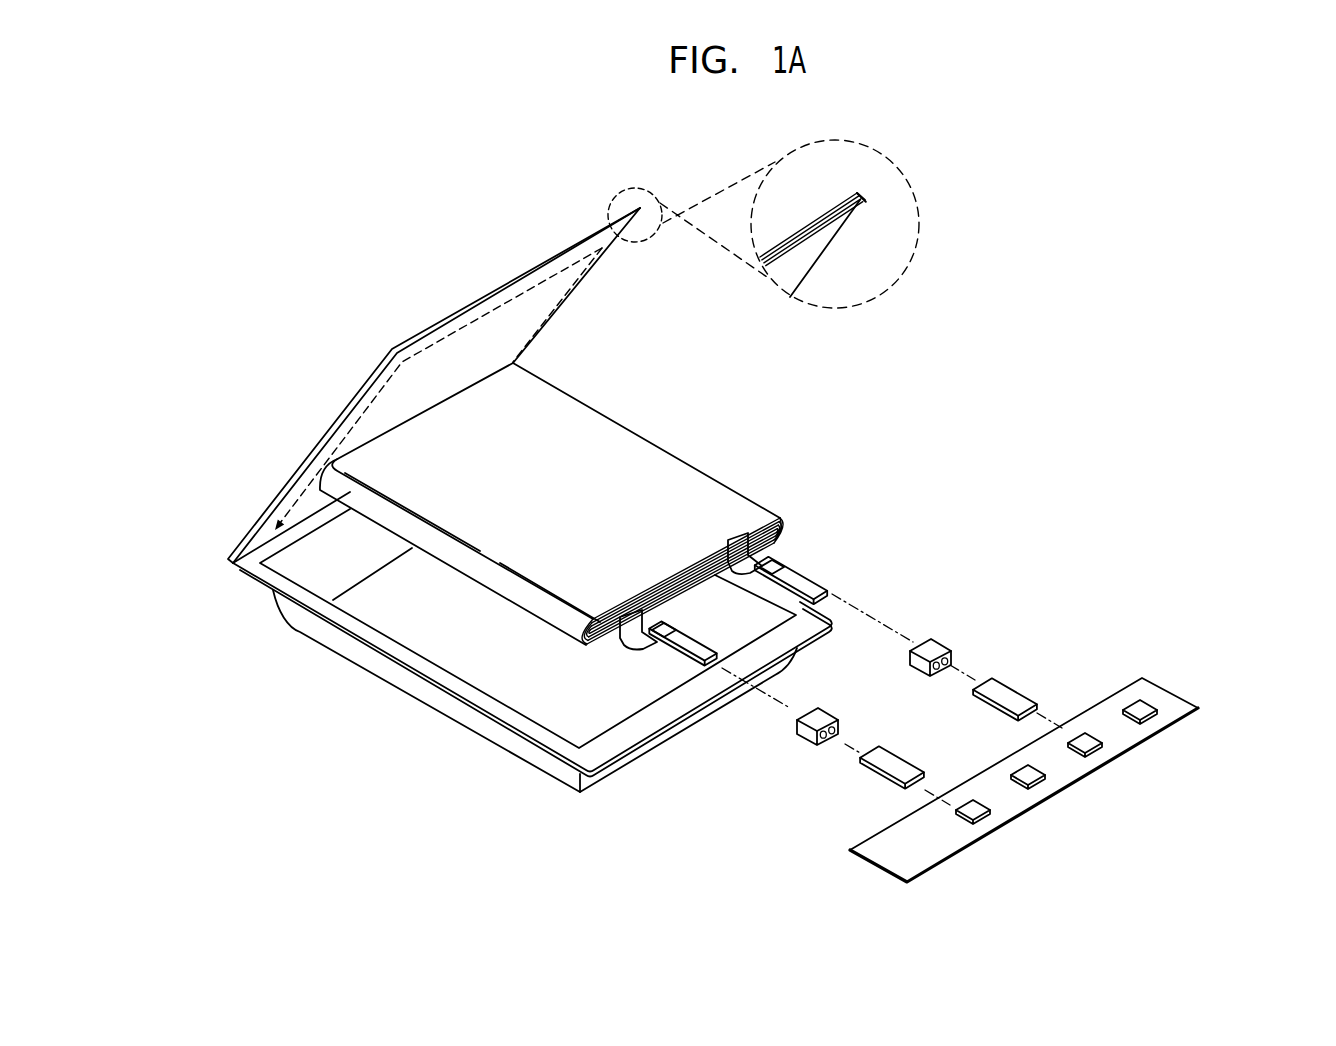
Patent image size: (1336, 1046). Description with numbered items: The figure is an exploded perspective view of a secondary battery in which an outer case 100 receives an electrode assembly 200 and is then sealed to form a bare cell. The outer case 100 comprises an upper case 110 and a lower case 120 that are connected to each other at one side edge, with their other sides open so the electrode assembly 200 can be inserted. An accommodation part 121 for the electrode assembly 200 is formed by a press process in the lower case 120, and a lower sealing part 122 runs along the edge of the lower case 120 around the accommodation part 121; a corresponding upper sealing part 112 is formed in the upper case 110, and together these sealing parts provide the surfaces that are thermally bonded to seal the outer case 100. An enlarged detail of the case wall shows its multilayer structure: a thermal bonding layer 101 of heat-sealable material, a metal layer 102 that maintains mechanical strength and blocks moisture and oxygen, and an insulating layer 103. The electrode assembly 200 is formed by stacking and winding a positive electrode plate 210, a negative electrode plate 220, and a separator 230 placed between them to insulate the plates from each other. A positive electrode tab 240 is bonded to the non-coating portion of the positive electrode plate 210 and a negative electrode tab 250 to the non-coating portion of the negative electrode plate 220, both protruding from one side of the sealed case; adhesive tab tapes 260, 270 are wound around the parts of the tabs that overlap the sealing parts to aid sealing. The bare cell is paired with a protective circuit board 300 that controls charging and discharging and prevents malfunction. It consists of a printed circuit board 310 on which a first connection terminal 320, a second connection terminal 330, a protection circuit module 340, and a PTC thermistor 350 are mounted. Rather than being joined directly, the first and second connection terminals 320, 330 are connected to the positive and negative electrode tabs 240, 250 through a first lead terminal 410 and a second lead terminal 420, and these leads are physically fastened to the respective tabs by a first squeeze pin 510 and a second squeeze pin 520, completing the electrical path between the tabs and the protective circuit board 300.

The outer case 100 is at (168, 507).
The upper case 110 is at (267, 514).
The upper sealing part 112 is at (320, 468).
The lower case 120 is at (300, 615).
The accommodation part 121 is at (503, 674).
The lower sealing part 122 is at (527, 731).
The thermal bonding layer 101 is at (857, 193).
The metal layer 102 is at (858, 196).
The insulating layer 103 is at (859, 196).
The electrode assembly 200 is at (623, 397).
The positive electrode plate 210 is at (783, 521).
The negative electrode plate 220 is at (790, 530).
The separator 230 is at (785, 527).
The positive electrode tab 240 is at (707, 660).
The negative electrode tab 250 is at (813, 585).
The adhesive tab tape 260 is at (653, 645).
The adhesive tab tape 270 is at (805, 556).
The protective circuit board 300 is at (1164, 678).
The printed circuit board 310 is at (1200, 711).
The first connection terminal 320 is at (982, 815).
The second connection terminal 330 is at (1092, 750).
The protection circuit module 340 is at (1036, 781).
The positive temperature coefficient (PTC) thermistor 350 is at (1150, 722).
The first lead terminal 410 is at (880, 768).
The second lead terminal 420 is at (1012, 690).
The first squeeze pin 510 is at (797, 728).
The second squeeze pin 520 is at (940, 648).